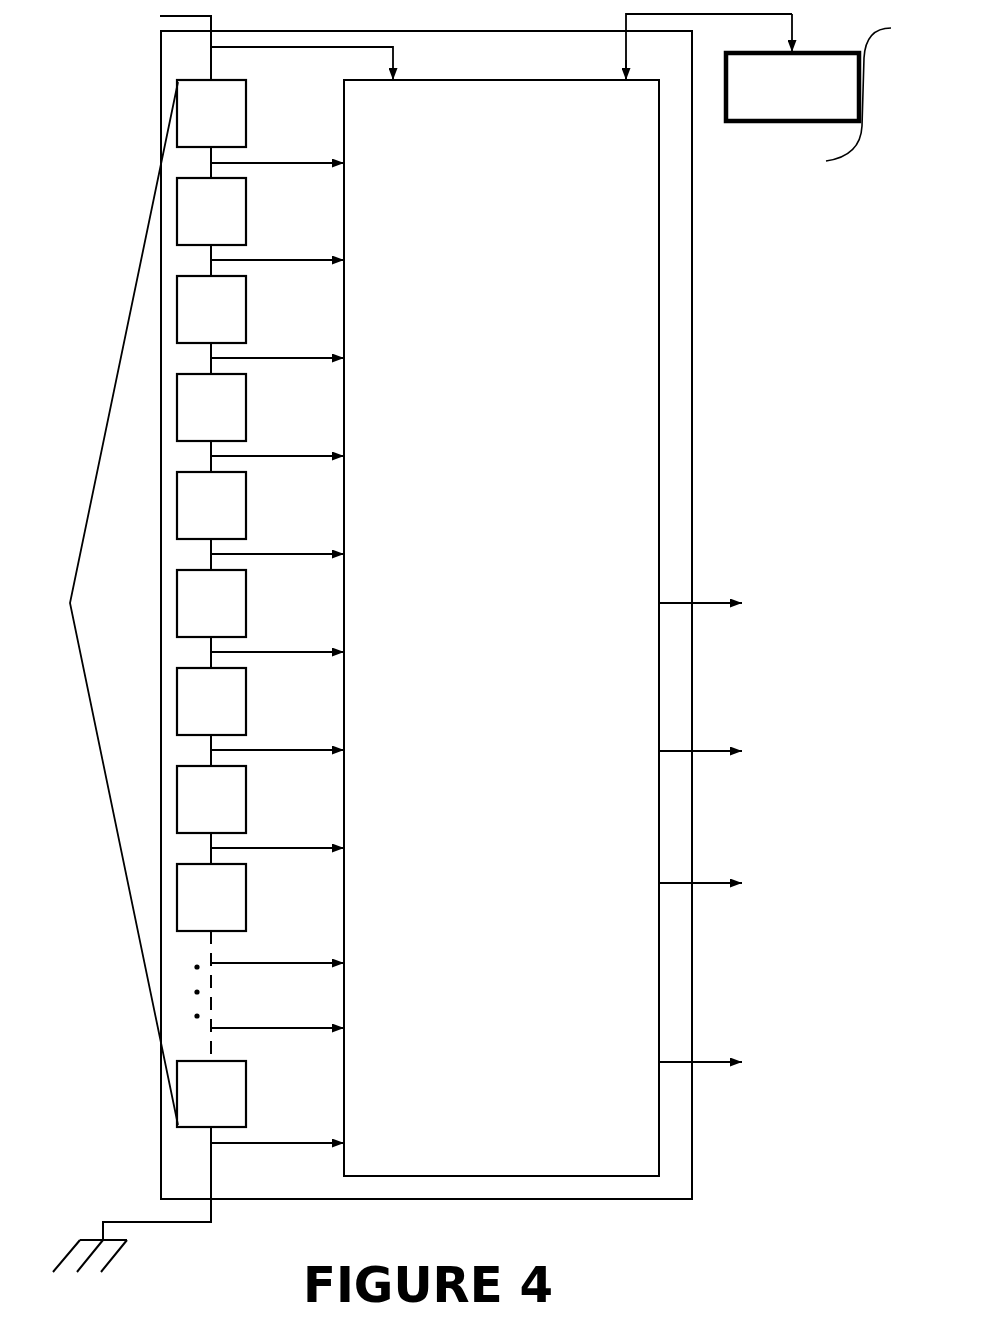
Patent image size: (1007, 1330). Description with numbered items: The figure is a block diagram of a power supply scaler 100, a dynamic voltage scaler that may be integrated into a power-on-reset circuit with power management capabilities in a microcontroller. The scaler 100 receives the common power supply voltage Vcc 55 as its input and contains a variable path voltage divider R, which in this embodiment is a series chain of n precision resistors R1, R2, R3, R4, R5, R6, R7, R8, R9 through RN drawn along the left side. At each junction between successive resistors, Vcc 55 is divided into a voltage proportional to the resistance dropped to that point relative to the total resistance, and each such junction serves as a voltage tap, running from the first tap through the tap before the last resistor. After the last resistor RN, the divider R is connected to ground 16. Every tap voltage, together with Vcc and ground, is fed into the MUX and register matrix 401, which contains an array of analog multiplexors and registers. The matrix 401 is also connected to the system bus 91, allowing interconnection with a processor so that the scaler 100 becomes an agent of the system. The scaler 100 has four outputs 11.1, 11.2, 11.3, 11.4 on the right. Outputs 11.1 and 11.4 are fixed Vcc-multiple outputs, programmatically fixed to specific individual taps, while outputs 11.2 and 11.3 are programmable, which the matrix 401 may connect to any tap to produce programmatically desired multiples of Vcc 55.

The common power supply voltage Vcc 55 is at (407, 40).
The power supply scaler 100 is at (426, 615).
The MUX and register matrix 401 is at (501, 628).
The system bus 91 is at (808, 87).
The ground 16 is at (92, 1238).
The voltage divider R is at (114, 603).
The precision resistor R1 is at (211, 113).
The precision resistor R2 is at (211, 211).
The precision resistor R3 is at (211, 309).
The precision resistor R4 is at (211, 407).
The precision resistor R5 is at (211, 505).
The precision resistor R6 is at (211, 603).
The precision resistor R7 is at (211, 701).
The precision resistor R8 is at (211, 799).
The precision resistor R9 is at (211, 897).
The last precision resistor Rn RN is at (211, 1094).
The output 11.1 is at (728, 1063).
The output 11.2 is at (728, 884).
The output 11.3 is at (728, 752).
The output 11.4 is at (728, 604).